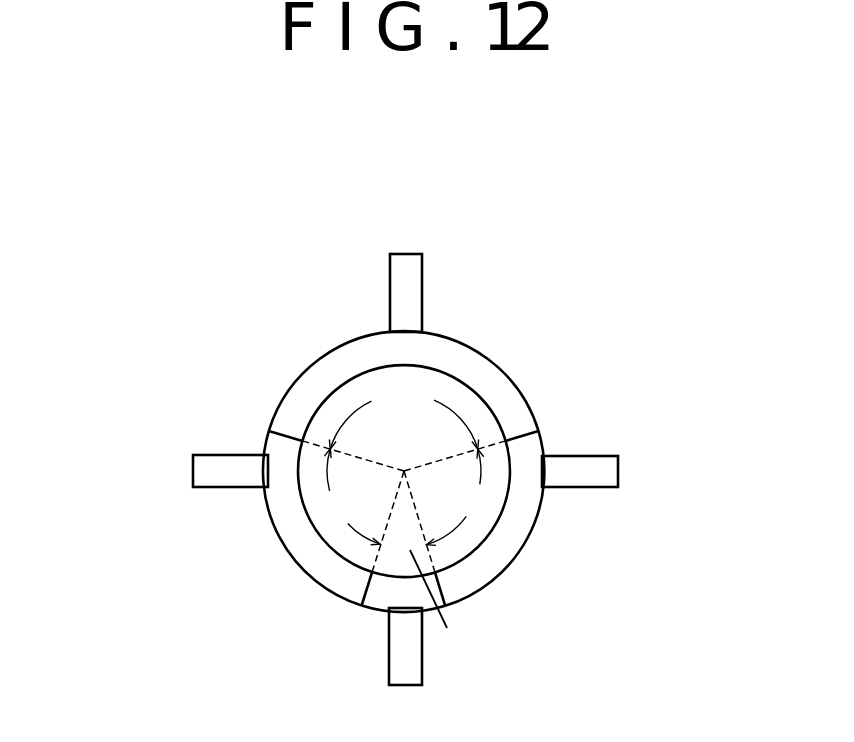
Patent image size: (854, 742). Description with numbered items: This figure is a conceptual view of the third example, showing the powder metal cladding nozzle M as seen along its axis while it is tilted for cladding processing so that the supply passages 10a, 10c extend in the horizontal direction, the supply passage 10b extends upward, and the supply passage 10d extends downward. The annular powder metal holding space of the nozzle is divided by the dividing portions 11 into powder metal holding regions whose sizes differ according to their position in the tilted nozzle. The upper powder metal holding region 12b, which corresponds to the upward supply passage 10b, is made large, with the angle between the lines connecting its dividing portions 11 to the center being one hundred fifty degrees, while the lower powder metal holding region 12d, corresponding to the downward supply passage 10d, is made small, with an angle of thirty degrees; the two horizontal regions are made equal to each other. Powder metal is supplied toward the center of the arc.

The powder metal cladding nozzle M is at (361, 200).
The supply passage 10a is at (205, 465).
The supply passage 10b is at (403, 267).
The supply passage 10c is at (605, 473).
The supply passage 10d is at (405, 660).
The dividing portion 11 is at (285, 433).
The powder metal holding region 12b is at (475, 372).
The powder metal holding region 12d is at (388, 588).